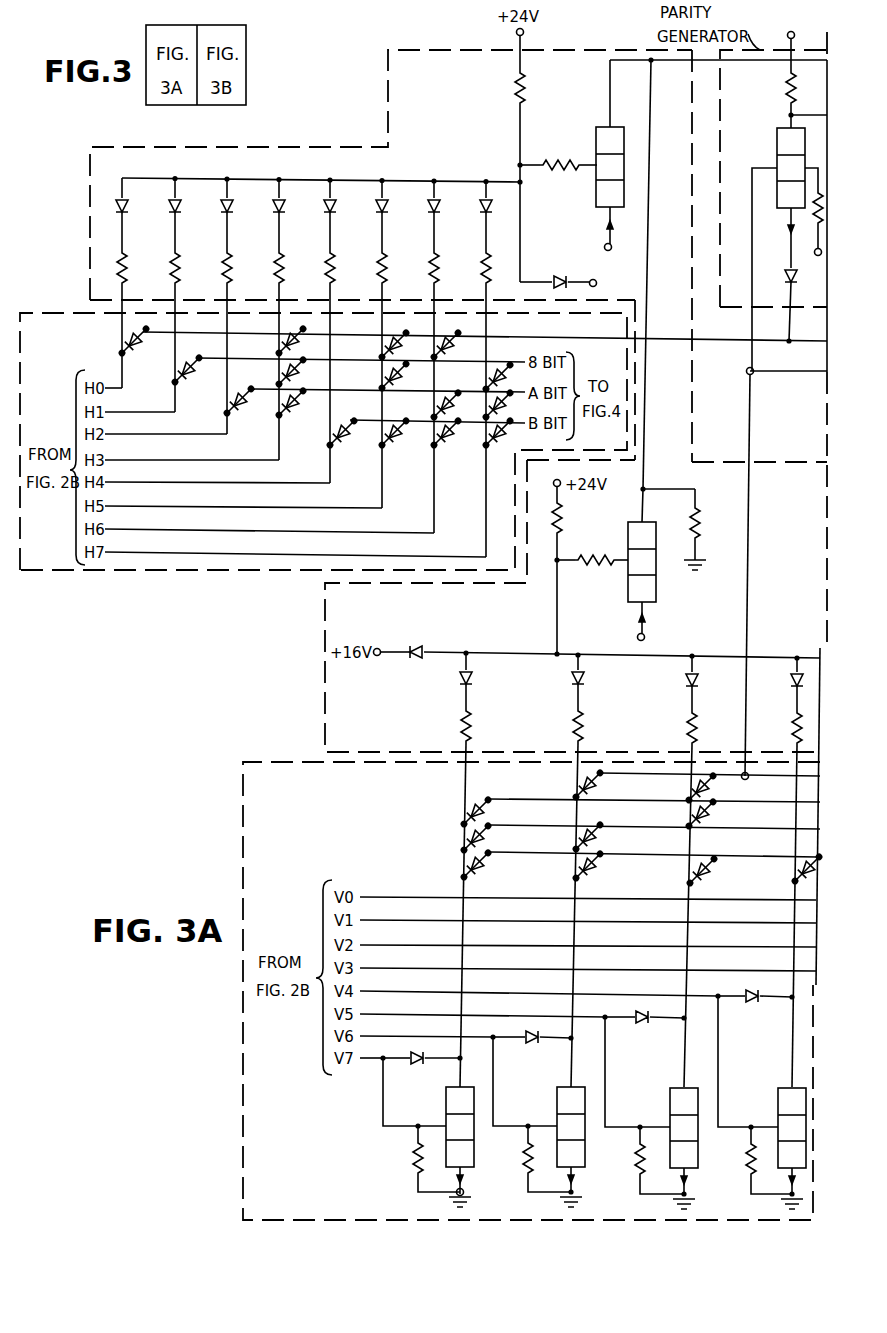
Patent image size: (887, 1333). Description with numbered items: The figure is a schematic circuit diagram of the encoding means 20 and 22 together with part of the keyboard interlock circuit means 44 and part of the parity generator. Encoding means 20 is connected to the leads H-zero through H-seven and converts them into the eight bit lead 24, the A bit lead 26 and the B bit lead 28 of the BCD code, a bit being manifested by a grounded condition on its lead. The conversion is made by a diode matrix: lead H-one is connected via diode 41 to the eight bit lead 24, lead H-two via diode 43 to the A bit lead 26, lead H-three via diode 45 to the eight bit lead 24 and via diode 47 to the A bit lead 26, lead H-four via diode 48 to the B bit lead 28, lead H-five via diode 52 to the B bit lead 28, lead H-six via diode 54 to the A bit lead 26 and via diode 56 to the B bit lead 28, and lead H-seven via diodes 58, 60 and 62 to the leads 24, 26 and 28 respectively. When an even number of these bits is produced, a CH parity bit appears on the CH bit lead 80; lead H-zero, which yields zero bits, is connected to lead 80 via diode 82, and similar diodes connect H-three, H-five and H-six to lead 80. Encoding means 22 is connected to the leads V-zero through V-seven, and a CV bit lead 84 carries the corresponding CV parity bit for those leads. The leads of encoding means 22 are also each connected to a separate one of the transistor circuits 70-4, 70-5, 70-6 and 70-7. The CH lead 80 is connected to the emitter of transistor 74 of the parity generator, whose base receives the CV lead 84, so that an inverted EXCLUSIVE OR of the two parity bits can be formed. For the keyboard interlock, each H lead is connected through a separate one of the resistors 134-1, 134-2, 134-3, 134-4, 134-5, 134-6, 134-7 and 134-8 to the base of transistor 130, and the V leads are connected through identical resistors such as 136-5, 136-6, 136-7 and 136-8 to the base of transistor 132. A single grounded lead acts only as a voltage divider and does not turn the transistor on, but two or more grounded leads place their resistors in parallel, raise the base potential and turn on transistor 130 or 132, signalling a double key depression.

The keyboard interlock circuit means 44 is at (388, 97).
The encoding means 20 is at (190, 571).
The encoding means 22 is at (243, 816).
The transistor 130 is at (597, 142).
The transistor 132 is at (656, 597).
The transistor 74 is at (777, 146).
The resistor 134-1 is at (124, 270).
The resistor 134-2 is at (177, 270).
The resistor 134-3 is at (229, 270).
The resistor 134-4 is at (281, 270).
The resistor 134-5 is at (332, 270).
The resistor 134-6 is at (384, 270).
The resistor 134-7 is at (436, 270).
The resistor 134-8 is at (488, 270).
The resistor 136-5 is at (795, 740).
The resistor 136-6 is at (690, 740).
The resistor 136-7 is at (576, 738).
The resistor 136-8 is at (464, 738).
The transistor circuit 70-4 is at (778, 1102).
The transistor circuit 70-5 is at (670, 1102).
The transistor circuit 70-6 is at (557, 1102).
The transistor circuit 70-7 is at (446, 1102).
The CH bit lead 80 is at (505, 337).
The CV bit lead 84 is at (820, 368).
The 8 bit lead 24 is at (523, 360).
The A bit lead 26 is at (523, 391).
The B bit lead 28 is at (523, 421).
The diode 82 is at (132, 357).
The diode 41 is at (186, 386).
The diode 43 is at (238, 417).
The diode 45 is at (293, 380).
The diode 47 is at (291, 419).
The diode 48 is at (342, 448).
The diode 52 is at (394, 448).
The diode 54 is at (396, 380).
The diode 56 is at (446, 448).
The diode 58 is at (494, 377).
The diode 60 is at (447, 406).
The diode 62 is at (498, 448).